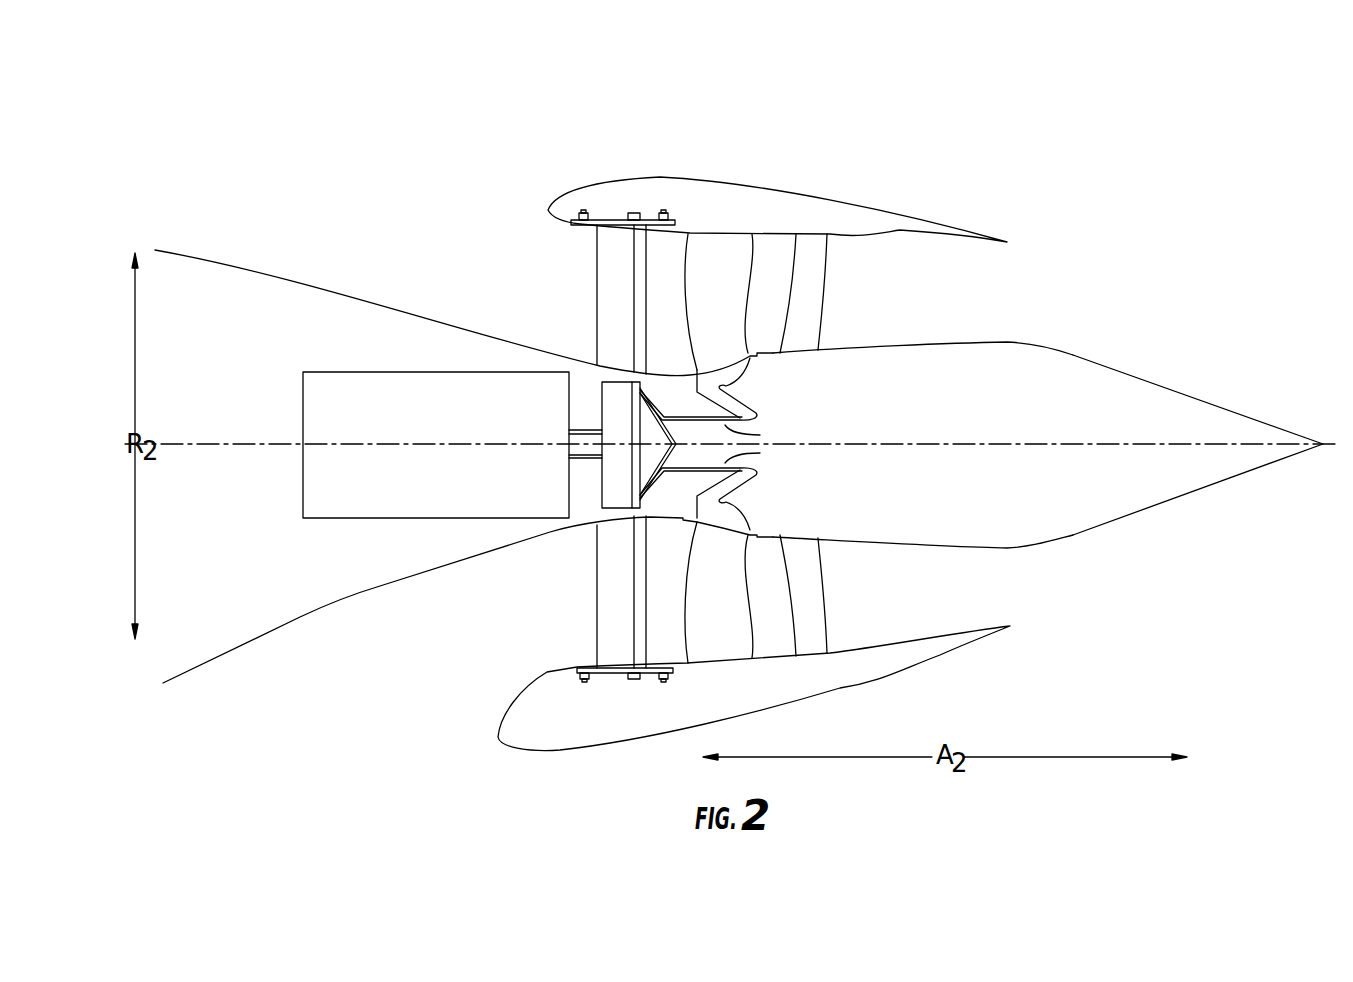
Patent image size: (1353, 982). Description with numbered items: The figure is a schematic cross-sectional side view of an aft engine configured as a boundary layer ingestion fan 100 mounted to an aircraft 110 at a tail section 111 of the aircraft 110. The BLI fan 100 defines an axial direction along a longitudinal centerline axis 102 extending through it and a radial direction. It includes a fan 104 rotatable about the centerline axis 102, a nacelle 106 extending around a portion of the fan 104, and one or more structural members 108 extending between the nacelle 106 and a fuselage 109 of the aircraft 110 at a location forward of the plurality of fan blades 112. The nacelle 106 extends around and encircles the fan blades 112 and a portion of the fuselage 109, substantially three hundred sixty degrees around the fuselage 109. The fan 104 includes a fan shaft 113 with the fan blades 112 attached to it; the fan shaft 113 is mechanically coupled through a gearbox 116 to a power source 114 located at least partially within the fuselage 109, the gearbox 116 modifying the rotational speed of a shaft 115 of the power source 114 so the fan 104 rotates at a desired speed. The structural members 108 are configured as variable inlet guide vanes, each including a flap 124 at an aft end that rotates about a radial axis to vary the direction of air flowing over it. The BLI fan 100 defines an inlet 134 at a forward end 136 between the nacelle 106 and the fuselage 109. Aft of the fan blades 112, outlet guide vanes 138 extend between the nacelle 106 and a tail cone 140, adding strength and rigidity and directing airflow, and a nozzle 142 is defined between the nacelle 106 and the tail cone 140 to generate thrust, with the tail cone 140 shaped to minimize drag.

The boundary layer ingestion (BLI) fan 100 is at (1074, 191).
The longitudinal centerline axis 102 is at (1246, 440).
The fan 104 is at (724, 254).
The nacelle 106 is at (755, 183).
The structural members 108 is at (607, 265).
The fuselage 109 is at (227, 266).
The aircraft 110 is at (199, 120).
The tail section 111 is at (440, 138).
The fan blades 112 is at (745, 278).
The fan shaft 113 is at (760, 435).
The power source 114 is at (465, 372).
The shaft 115 is at (587, 460).
The gearbox 116 is at (598, 392).
The flap 124 is at (636, 240).
The inlet 134 is at (553, 613).
The forward end 136 is at (492, 750).
The outlet guide vanes 138 is at (818, 598).
The tail cone 140 is at (1085, 361).
The nozzle 142 is at (996, 302).